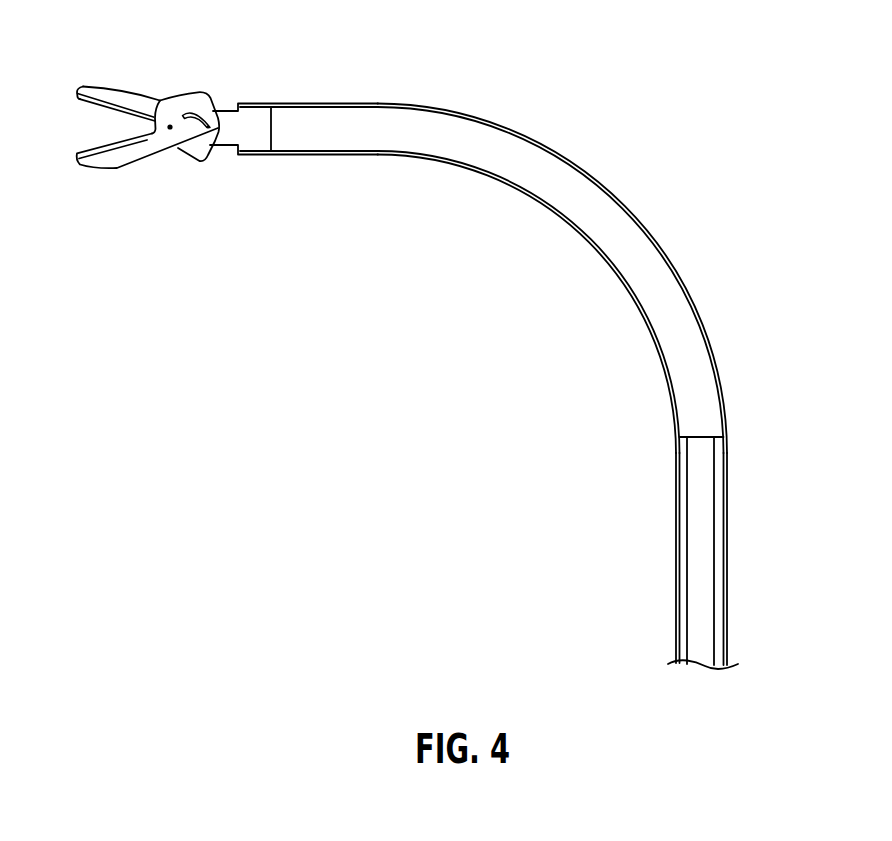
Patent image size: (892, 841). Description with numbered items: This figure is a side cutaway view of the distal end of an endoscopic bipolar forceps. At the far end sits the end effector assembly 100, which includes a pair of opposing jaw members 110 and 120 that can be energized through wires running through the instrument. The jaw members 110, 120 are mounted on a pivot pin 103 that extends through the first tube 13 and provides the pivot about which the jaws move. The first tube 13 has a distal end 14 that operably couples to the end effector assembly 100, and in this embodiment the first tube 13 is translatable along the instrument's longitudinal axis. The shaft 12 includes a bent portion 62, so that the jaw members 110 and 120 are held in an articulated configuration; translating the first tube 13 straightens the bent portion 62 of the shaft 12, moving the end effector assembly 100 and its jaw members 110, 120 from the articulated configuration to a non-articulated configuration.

The end effector assembly 100 is at (213, 65).
The jaw member 110 is at (103, 85).
The jaw member 120 is at (103, 168).
The pivot pin 103 is at (170, 127).
The distal end 14 is at (253, 103).
The shaft 12 is at (663, 243).
The bent portion 62 is at (550, 238).
The first tube 13 is at (718, 518).